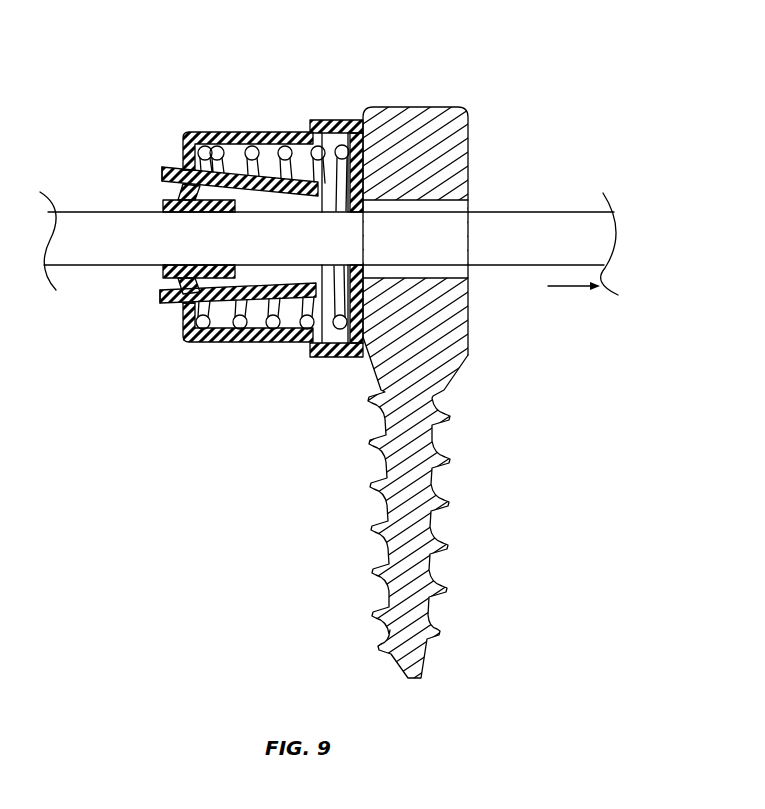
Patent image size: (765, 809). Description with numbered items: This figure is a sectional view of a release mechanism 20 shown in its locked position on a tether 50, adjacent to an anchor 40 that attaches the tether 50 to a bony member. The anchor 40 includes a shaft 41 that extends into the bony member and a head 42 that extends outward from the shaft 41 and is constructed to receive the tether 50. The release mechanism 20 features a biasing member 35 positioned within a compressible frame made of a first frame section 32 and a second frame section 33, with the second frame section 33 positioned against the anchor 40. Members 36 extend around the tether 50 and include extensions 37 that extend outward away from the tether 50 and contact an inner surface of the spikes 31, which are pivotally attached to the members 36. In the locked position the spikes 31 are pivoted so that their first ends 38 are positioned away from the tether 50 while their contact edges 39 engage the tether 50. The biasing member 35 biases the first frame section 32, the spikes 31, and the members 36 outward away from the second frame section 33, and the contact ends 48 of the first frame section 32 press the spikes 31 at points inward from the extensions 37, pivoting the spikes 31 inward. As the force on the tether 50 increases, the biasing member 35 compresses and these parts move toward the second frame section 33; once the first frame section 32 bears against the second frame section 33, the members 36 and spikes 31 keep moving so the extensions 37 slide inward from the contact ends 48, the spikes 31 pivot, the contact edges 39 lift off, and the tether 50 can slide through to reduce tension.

The release mechanism 20 is at (302, 214).
The spikes 31 is at (233, 134).
The first frame section 32 is at (265, 132).
The second frame section 33 is at (335, 120).
The biasing member 35 is at (276, 308).
The members 36 is at (163, 206).
The extensions 37 is at (167, 170).
The first ends 38 is at (164, 178).
The contact edges 39 is at (324, 198).
The anchor 40 is at (455, 389).
The shaft 41 is at (417, 533).
The head 42 is at (468, 152).
The contact ends 48 is at (178, 167).
The tether 50 is at (505, 232).